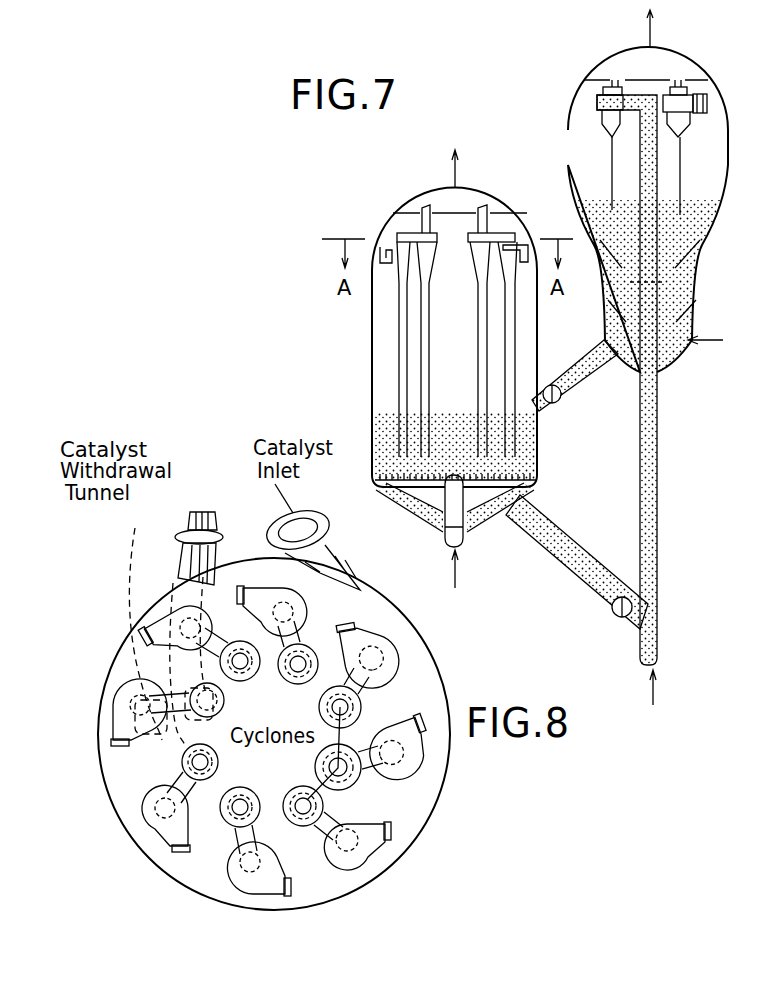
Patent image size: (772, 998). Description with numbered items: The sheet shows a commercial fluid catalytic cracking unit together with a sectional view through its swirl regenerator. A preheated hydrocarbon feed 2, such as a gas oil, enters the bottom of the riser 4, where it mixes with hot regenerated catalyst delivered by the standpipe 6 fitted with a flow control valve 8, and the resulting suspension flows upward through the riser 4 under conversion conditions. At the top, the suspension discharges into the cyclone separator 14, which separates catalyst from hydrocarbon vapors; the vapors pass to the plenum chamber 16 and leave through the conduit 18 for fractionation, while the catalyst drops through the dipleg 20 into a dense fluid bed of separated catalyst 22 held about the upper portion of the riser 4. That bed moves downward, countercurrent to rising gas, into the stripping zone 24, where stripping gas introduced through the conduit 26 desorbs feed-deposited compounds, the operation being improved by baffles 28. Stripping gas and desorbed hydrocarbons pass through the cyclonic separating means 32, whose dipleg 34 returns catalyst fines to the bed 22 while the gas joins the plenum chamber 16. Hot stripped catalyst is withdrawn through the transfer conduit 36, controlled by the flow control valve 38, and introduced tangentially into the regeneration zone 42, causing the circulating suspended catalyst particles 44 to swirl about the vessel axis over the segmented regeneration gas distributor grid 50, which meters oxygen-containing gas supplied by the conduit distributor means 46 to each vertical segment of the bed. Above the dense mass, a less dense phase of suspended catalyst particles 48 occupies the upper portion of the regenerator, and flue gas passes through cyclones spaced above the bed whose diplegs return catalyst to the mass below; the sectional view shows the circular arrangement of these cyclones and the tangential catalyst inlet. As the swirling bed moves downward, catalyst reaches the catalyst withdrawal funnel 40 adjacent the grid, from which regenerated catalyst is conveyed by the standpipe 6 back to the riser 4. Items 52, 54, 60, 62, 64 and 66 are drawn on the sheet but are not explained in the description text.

In FIG. 7, the hydrocarbon feed 2 is at (657, 688).
In FIG. 7, the riser 4 is at (662, 605).
In FIG. 7, the standpipe 6 is at (596, 577).
In FIG. 8, the standpipe 6 is at (212, 520).
In FIG. 7, the flow control valve 8 is at (615, 617).
In FIG. 7, the cyclone separator 14 is at (596, 101).
In FIG. 7, the plenum chamber 16 is at (683, 68).
In FIG. 7, the conduit 18 is at (652, 30).
In FIG. 7, the dipleg 20 is at (606, 166).
In FIG. 7, the dense fluid bed of separated catalyst 22 is at (700, 214).
In FIG. 7, the stripping zone 24 is at (693, 292).
In FIG. 7, the conduit 26 is at (714, 350).
In FIG. 7, the baffles 28 is at (657, 278).
In FIG. 7, the cyclonic separating means 32 is at (712, 101).
In FIG. 7, the dipleg 34 is at (686, 166).
In FIG. 7, the transfer conduit 36 is at (588, 388).
In FIG. 8, the transfer conduit 36 is at (300, 513).
In FIG. 7, the flow control valve 38 is at (553, 385).
In FIG. 7, the catalyst withdrawal funnel 40 is at (540, 460).
In FIG. 8, the catalyst withdrawal funnel 40 is at (167, 627).
In FIG. 7, the regeneration zone 42 is at (371, 397).
In FIG. 7, the circulating suspended catalyst particles 44 is at (455, 446).
In FIG. 7, the conduit distributor means 46 is at (460, 572).
In FIG. 7, the less dense phase of suspended catalyst particles 48 is at (465, 394).
In FIG. 7, the segmented regeneration gas distributor grid 50 is at (424, 519).
In FIG. 7, the product outlet / cyclone 52 is at (455, 173).
In FIG. 8, the product outlet / cyclone 52 is at (303, 807).
In FIG. 7, the cyclone header 54 is at (420, 202).
In FIG. 7, the support bracket 60 is at (396, 322).
In FIG. 7, the cyclone separator 62 is at (457, 331).
In FIG. 7, the cyclone dipleg 64 is at (478, 353).
In FIG. 7, the support bracket 66 is at (538, 320).